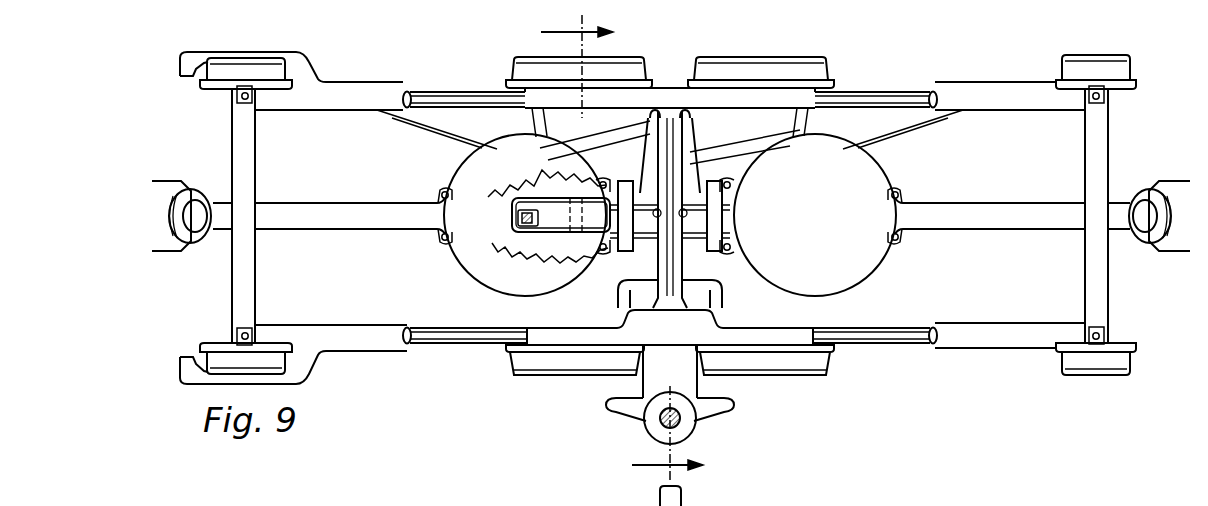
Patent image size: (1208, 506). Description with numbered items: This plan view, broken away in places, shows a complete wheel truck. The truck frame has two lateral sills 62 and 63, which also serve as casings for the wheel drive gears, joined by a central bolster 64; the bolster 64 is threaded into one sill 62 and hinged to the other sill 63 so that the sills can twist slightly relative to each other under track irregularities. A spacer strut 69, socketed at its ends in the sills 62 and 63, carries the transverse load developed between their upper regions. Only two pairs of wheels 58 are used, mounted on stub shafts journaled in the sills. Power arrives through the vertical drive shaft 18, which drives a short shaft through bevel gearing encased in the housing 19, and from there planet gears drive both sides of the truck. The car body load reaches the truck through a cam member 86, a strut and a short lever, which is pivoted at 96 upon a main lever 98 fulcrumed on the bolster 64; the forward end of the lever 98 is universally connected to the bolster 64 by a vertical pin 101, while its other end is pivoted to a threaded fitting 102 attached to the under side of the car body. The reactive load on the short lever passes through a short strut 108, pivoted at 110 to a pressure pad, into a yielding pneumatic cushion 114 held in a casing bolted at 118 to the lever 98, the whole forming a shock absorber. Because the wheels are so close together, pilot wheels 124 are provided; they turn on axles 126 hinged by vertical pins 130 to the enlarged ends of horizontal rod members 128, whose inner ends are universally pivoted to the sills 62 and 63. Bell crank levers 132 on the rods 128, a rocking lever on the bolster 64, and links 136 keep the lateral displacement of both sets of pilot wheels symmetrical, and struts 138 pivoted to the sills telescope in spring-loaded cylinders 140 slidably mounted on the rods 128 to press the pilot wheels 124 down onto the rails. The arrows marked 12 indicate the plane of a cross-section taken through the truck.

The section line 12- 12 is at (621, 247).
The drive shaft 18 is at (680, 422).
The housing 19 is at (607, 403).
The wheels 58 is at (822, 363).
The lateral sill 62 is at (664, 93).
The lateral sill 63 is at (751, 330).
The central bolster 64 is at (694, 135).
The spacer strut 69 is at (668, 267).
The cam member 86 is at (628, 182).
The pivot 96 is at (582, 245).
The main lever 98 is at (557, 208).
The pin 101 is at (687, 214).
The fitting 102 is at (192, 240).
The short strut 108 is at (515, 219).
The pivot 110 is at (527, 249).
The pneumatic cushion 114 is at (460, 180).
The bolts 118 is at (440, 238).
The pilot wheels 124 is at (1127, 69).
The axles 126 is at (254, 167).
The horizontal rod members 128 is at (427, 93).
The vertical pins 130 is at (240, 98).
The bell crank levers 132 is at (427, 119).
The links 136 is at (622, 142).
The struts 138 is at (447, 93).
The cylinders 140 is at (366, 70).